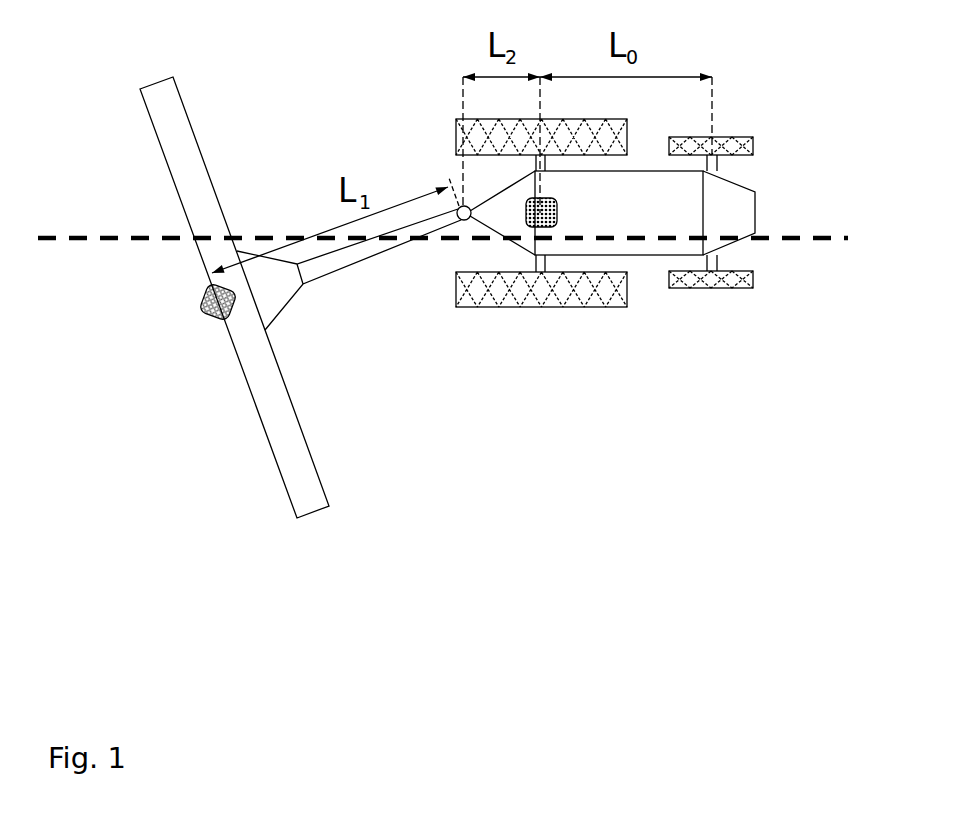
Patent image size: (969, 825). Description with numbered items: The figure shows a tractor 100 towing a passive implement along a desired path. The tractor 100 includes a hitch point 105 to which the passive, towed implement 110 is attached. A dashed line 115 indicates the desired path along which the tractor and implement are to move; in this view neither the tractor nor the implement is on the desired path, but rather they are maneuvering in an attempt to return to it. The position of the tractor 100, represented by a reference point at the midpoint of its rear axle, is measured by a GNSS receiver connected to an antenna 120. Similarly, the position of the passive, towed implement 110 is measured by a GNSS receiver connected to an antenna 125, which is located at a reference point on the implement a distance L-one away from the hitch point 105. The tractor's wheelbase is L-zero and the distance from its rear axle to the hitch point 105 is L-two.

The tractor 100 is at (663, 204).
The hitch point 105 is at (463, 233).
The passive, towed implement 110 is at (262, 389).
The dashed line 115 is at (75, 247).
The antenna 120 is at (549, 222).
The antenna 125 is at (210, 318).